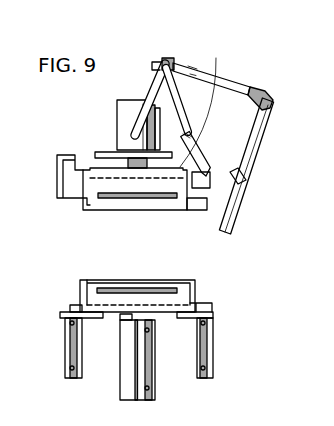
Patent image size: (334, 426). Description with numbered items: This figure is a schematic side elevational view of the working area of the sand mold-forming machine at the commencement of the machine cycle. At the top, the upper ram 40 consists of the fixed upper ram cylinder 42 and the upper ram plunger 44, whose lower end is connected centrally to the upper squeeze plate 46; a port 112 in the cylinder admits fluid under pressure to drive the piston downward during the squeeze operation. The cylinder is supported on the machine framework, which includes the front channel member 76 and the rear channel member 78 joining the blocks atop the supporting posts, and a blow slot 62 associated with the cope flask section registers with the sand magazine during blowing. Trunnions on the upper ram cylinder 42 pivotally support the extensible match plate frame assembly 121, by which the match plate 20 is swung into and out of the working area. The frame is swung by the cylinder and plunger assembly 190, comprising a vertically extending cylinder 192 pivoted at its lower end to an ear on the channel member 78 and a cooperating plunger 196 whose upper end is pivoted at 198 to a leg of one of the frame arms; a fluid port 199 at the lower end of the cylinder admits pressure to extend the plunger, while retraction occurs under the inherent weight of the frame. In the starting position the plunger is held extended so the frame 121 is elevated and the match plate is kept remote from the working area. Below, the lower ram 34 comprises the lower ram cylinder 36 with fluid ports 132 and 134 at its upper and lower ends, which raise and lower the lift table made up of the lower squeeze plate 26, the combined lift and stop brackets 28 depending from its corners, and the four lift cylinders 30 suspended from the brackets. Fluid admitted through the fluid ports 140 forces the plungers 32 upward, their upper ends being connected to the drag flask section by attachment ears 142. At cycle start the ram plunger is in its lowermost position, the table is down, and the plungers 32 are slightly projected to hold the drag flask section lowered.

The match plate 20 is at (250, 192).
The lower squeeze plate 26 is at (197, 305).
The combined lift and stop brackets 28 is at (213, 313).
The lift cylinders 30 is at (70, 350).
The plungers 32 is at (67, 312).
The lower ram 34 is at (138, 368).
The lower ram cylinder 36 is at (118, 373).
The upper ram 40 is at (114, 112).
The upper ram cylinder 42 is at (117, 136).
The upper ram plunger 44 is at (152, 157).
The upper squeeze plate 46 is at (187, 137).
The blow slot 62 is at (138, 287).
The channel member 76 is at (63, 173).
The channel member 78 is at (209, 163).
The port 112 is at (158, 93).
The match plate frame assembly 121 is at (254, 82).
The fluid port 132 is at (152, 330).
The fluid port 134 is at (152, 388).
The fluid ports 140 is at (210, 328).
The attachment ears 142 is at (70, 378).
The cylinder and plunger assembly 190 is at (222, 166).
The cylinder 192 is at (213, 67).
The plunger 196 is at (187, 73).
The pivot 198 is at (157, 73).
The fluid port 199 is at (210, 210).